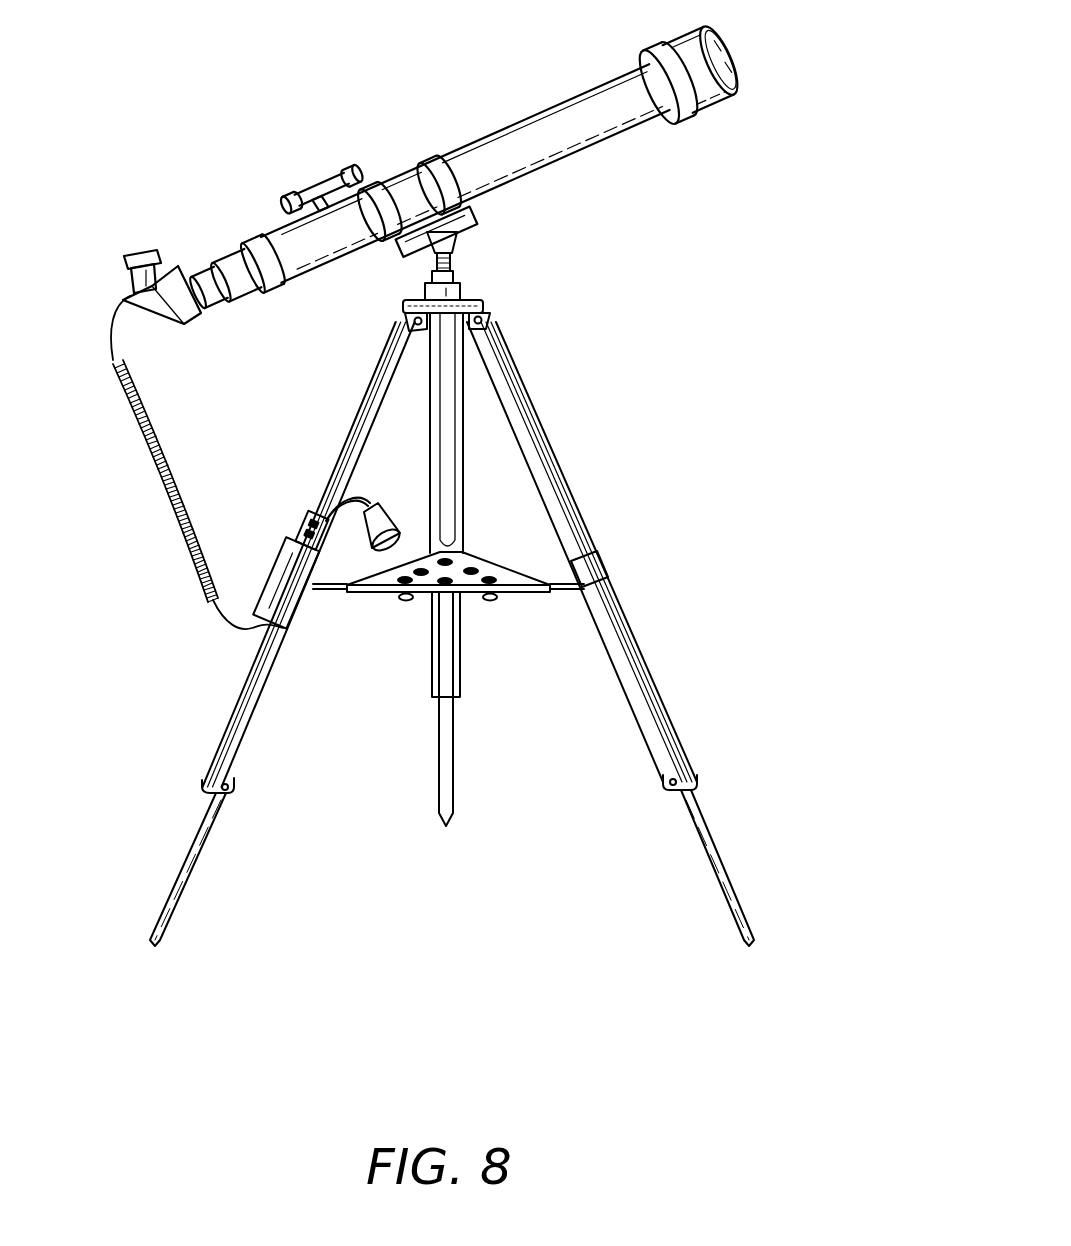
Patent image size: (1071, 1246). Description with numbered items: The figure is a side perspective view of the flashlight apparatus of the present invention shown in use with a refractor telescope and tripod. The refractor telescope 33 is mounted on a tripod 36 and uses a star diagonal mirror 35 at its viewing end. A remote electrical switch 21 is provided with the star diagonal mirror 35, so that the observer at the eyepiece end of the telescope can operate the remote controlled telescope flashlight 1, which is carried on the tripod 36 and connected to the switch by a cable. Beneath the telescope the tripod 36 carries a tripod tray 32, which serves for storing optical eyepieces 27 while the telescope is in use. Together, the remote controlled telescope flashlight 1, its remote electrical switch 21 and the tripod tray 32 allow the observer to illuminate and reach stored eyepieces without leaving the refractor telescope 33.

The remote controlled telescope flashlight 1 is at (148, 493).
The remote electrical switch 21 is at (128, 281).
The optical eyepieces 27 is at (403, 603).
The tripod tray 32 is at (483, 562).
The refractor telescope 33 is at (598, 195).
The star diagonal mirror 35 is at (174, 262).
The tripod 36 is at (613, 515).